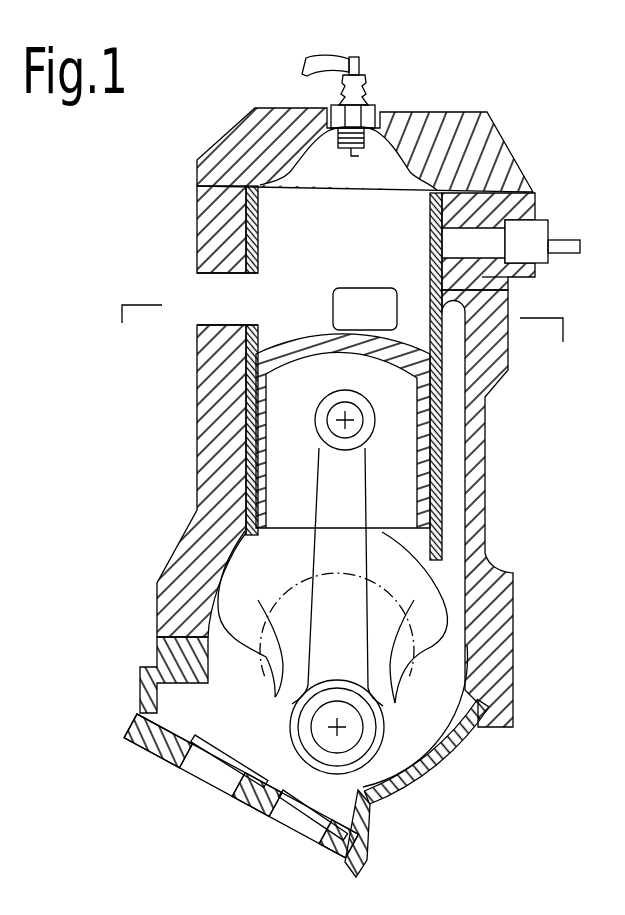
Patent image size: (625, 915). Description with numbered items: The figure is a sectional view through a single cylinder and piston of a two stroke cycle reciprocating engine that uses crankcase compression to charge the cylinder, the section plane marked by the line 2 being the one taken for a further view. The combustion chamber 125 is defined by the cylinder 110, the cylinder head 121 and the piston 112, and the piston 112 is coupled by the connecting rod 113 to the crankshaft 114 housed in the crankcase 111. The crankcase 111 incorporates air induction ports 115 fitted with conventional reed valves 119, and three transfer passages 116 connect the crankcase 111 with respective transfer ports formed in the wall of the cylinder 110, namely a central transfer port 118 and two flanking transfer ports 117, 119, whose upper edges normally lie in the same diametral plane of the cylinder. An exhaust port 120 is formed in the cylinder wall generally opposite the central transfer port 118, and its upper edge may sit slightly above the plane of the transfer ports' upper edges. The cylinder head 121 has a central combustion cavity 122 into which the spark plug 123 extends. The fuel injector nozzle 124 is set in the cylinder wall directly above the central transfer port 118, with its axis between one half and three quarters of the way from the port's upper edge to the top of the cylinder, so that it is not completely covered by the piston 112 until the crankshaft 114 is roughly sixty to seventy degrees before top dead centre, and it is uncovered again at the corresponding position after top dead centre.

The cylinder 110 is at (200, 218).
The crankcase 111 is at (200, 633).
The piston 112 is at (195, 410).
The connecting rod 113 is at (337, 499).
The crankshaft 114 is at (391, 797).
The air induction ports 115 is at (290, 828).
The transfer passages 116 is at (460, 495).
The flanking transfer port 117 is at (360, 297).
The central transfer port 118 is at (485, 279).
The reed valves 119 is at (303, 800).
The exhaust port 120 is at (257, 297).
The cylinder head 121 is at (466, 113).
The central combustion cavity 122 is at (392, 110).
The spark plug 123 is at (362, 56).
The fuel injector nozzle 124 is at (540, 215).
The combustion chamber 125 is at (447, 190).
The section line 2 is at (343, 344).